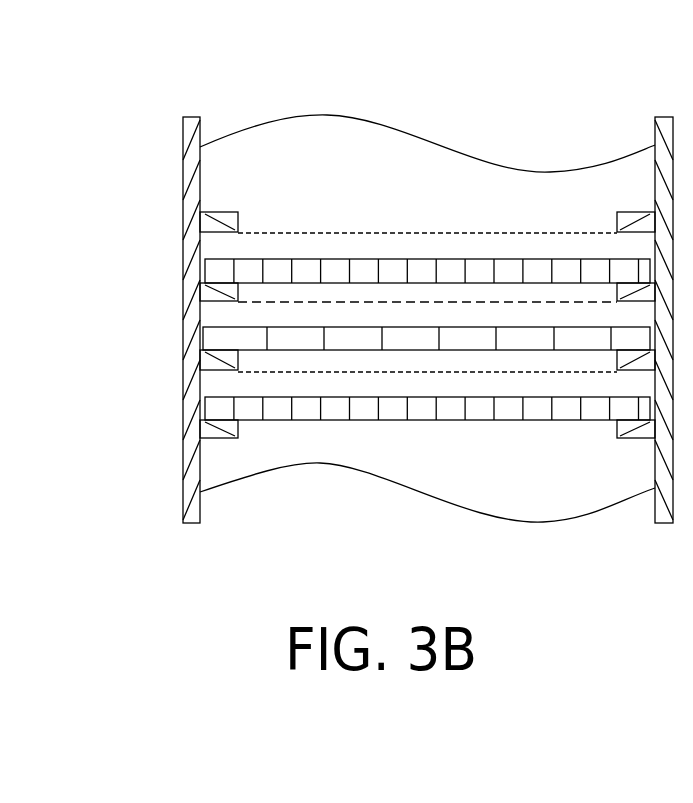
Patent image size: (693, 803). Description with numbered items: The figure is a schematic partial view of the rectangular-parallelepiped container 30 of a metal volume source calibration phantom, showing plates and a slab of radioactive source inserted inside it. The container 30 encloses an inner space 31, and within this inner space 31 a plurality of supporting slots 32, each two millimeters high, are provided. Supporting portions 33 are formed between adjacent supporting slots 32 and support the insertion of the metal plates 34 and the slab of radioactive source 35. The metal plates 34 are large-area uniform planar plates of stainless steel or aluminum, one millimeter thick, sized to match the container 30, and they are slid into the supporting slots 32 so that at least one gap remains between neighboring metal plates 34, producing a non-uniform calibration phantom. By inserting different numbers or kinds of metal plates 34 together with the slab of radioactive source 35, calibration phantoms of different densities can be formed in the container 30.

The rectangular-parallelepiped container 30 is at (183, 140).
The inner space 31 is at (433, 192).
The supporting slot 32 is at (464, 234).
The supporting portion 33 is at (213, 213).
The metal plate 34 is at (218, 263).
The slab of radioactive source 35 is at (227, 332).